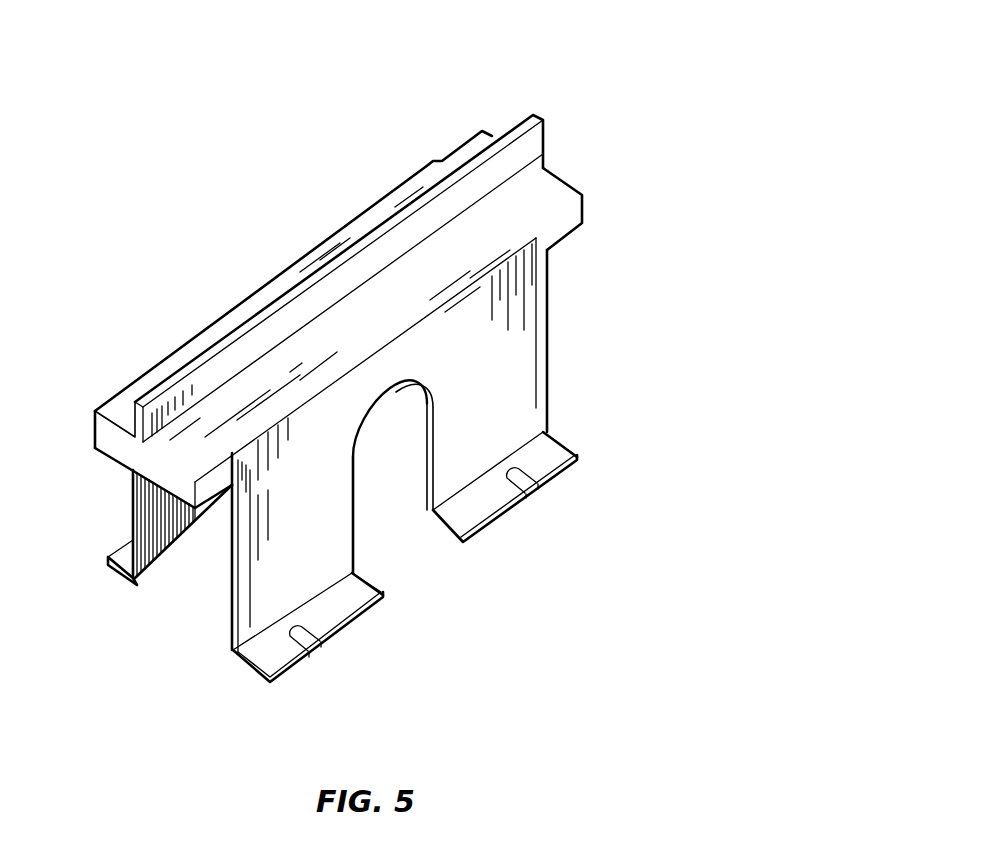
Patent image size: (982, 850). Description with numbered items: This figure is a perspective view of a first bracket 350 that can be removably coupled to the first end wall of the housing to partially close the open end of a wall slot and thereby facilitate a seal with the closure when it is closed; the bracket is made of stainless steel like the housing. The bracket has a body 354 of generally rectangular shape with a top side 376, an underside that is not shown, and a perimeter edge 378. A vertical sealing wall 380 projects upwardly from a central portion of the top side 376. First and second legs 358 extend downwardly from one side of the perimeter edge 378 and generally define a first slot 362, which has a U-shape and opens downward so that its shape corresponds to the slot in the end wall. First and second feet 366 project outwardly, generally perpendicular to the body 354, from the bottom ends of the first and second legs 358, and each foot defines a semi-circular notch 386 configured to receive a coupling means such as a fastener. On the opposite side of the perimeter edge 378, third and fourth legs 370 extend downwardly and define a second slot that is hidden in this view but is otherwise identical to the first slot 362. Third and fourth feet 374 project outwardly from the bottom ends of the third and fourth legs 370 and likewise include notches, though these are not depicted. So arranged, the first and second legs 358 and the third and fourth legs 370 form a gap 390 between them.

The first bracket 350 is at (559, 58).
The body 354 is at (560, 196).
The first and second legs 358 is at (528, 372).
The first slot 362 is at (414, 476).
The first and second feet 366 is at (476, 510).
The third and fourth legs 370 is at (133, 511).
The third and fourth feet 374 is at (108, 566).
The top side 376 is at (399, 322).
The perimeter edge 378 is at (112, 437).
The vertical sealing wall 380 is at (535, 148).
The notch 386 is at (312, 645).
The gap 390 is at (224, 634).